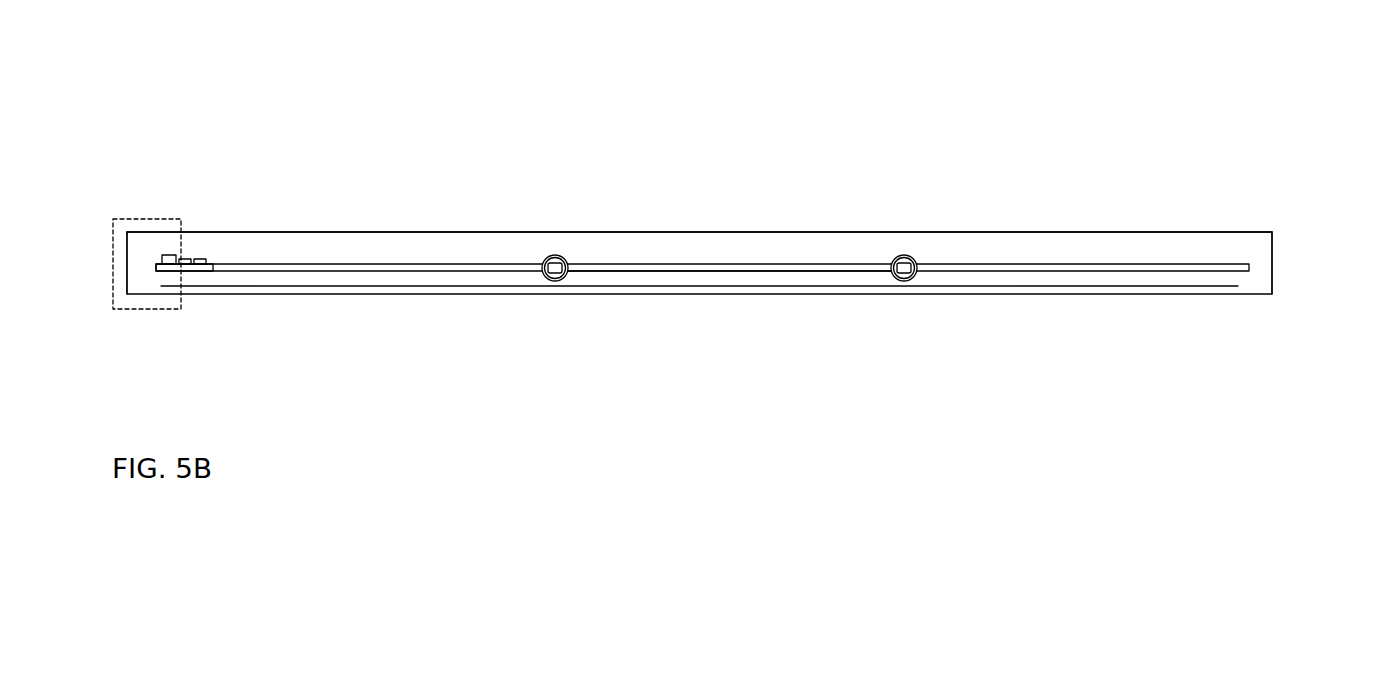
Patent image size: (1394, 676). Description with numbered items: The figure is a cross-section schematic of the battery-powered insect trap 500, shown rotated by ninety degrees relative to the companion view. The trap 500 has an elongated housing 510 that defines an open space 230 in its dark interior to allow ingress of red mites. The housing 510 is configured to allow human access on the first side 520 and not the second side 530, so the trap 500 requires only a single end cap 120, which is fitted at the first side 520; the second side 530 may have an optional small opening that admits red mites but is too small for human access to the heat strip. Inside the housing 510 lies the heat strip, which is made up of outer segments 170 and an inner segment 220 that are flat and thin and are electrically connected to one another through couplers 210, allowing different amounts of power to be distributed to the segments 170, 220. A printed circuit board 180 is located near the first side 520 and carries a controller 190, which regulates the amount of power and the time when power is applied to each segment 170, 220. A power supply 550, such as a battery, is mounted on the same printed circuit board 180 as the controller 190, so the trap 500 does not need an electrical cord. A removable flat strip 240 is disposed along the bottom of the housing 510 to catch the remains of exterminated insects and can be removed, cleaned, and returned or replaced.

The trap 500 is at (1075, 72).
The housing 510 is at (953, 232).
The first side 520 is at (84, 243).
The second side 530 is at (1295, 257).
The end cap 120 is at (150, 218).
The outer segments 170 is at (307, 273).
The printed circuit board 180 is at (189, 273).
The controller 190 is at (198, 258).
The couplers 210 is at (548, 257).
The inner segment 220 is at (657, 273).
The open space 230 is at (388, 252).
The removable flat strip 240 is at (1077, 288).
The power supply 550 is at (173, 265).